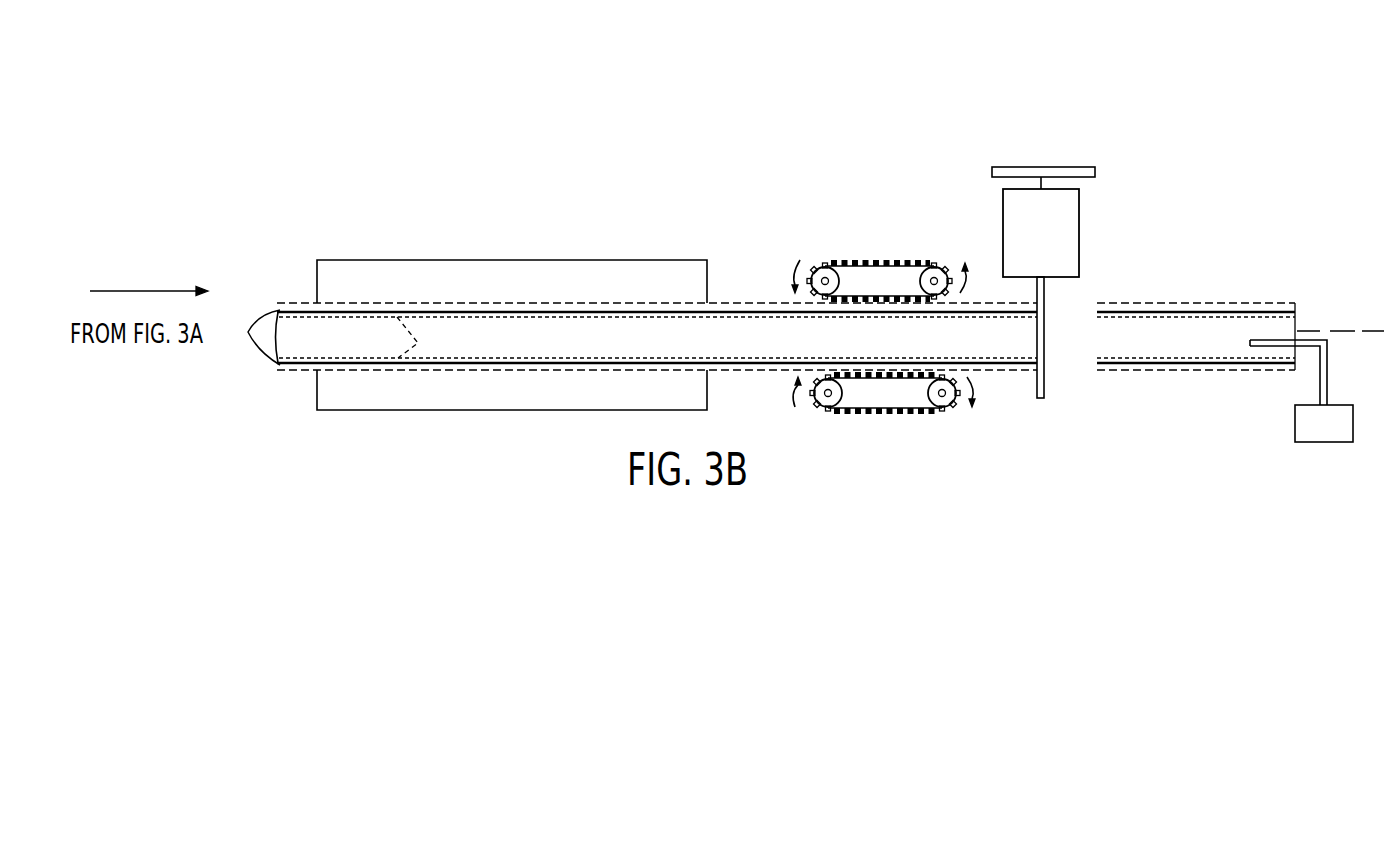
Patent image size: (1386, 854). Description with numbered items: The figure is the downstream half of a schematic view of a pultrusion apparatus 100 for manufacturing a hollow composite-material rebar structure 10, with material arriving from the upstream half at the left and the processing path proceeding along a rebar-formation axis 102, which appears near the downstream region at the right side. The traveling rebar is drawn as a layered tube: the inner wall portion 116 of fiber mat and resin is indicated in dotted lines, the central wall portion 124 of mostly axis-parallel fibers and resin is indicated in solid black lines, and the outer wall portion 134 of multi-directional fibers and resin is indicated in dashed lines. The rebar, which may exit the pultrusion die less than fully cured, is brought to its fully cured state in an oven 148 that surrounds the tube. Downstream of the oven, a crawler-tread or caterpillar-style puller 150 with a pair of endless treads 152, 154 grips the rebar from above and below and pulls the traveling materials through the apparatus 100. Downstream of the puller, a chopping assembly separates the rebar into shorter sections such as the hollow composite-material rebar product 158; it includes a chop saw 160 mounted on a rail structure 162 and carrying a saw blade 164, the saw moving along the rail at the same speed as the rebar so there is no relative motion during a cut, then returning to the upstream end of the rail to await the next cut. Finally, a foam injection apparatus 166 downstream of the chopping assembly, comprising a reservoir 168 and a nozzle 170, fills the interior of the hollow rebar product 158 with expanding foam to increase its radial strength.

The pultrusion apparatus 100 is at (734, 109).
The rebar structure 10 is at (746, 268).
The rebar-formation axis 102 is at (1342, 325).
The inner wall portion 116 is at (418, 343).
The central wall portion 124 is at (249, 337).
The outer wall portion 134 is at (297, 302).
The oven 148 is at (468, 260).
The puller 150 is at (913, 233).
The endless tread 152 is at (880, 263).
The endless tread 154 is at (878, 410).
The hollow composite-material rebar product 158 is at (1203, 325).
The chop saw 160 is at (1079, 235).
The rail structure 162 is at (1050, 167).
The saw blade 164 is at (1044, 395).
The foam injection apparatus 166 is at (1271, 454).
The reservoir 168 is at (1295, 423).
The nozzle 170 is at (1270, 348).